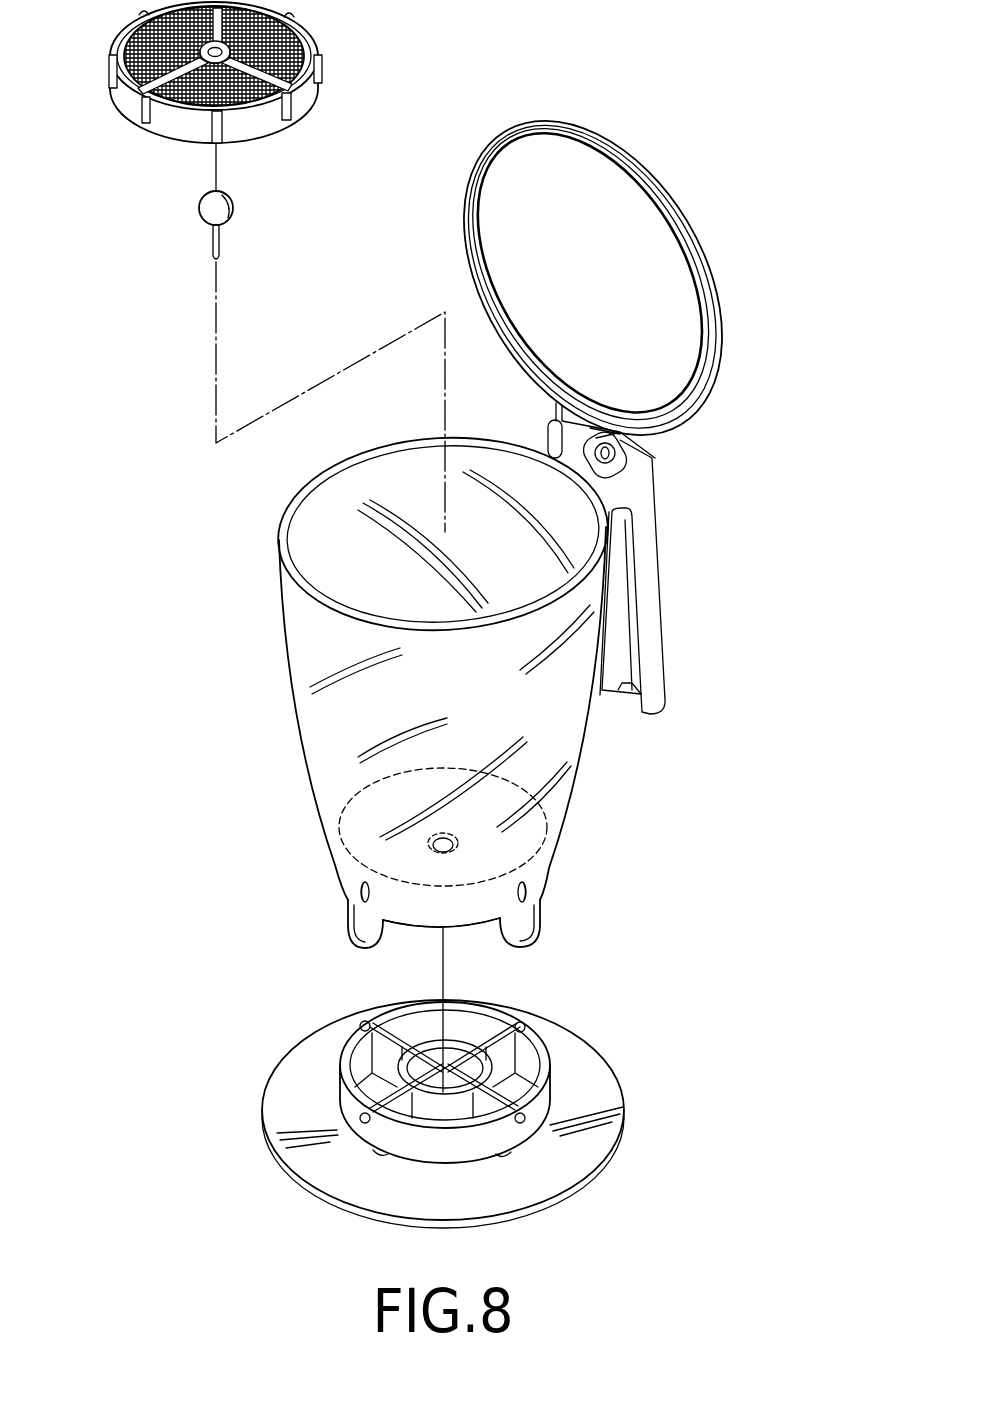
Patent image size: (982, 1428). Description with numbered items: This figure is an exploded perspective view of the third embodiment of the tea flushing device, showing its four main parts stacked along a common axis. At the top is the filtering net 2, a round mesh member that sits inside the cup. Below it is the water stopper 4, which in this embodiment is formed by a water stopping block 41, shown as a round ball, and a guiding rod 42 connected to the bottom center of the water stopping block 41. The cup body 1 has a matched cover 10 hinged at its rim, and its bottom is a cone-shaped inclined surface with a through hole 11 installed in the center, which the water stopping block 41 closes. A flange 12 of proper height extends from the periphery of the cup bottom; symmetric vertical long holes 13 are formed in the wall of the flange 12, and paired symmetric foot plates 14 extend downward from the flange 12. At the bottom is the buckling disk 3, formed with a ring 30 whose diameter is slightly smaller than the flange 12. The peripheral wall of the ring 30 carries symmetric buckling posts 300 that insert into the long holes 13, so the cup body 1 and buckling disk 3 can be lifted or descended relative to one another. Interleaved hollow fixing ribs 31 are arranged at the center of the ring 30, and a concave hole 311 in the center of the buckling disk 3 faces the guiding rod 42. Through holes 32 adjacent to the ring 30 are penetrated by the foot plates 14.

The cup body 1 is at (496, 701).
The cover 10 is at (703, 347).
The through hole 11 is at (390, 827).
The flange 12 is at (420, 910).
The vertical long holes 13 is at (360, 892).
The foot plates 14 is at (360, 922).
The filtering net 2 is at (337, 67).
The buckling disk 3 is at (466, 1111).
The ring 30 is at (343, 1103).
The buckling posts 300 is at (360, 1026).
The fixing ribs 31 is at (380, 1055).
The concave hole 311 is at (440, 1067).
The through holes 32 is at (382, 1156).
The water stopper 4 is at (232, 221).
The water stopping block 41 is at (200, 210).
The guiding rod 42 is at (210, 245).